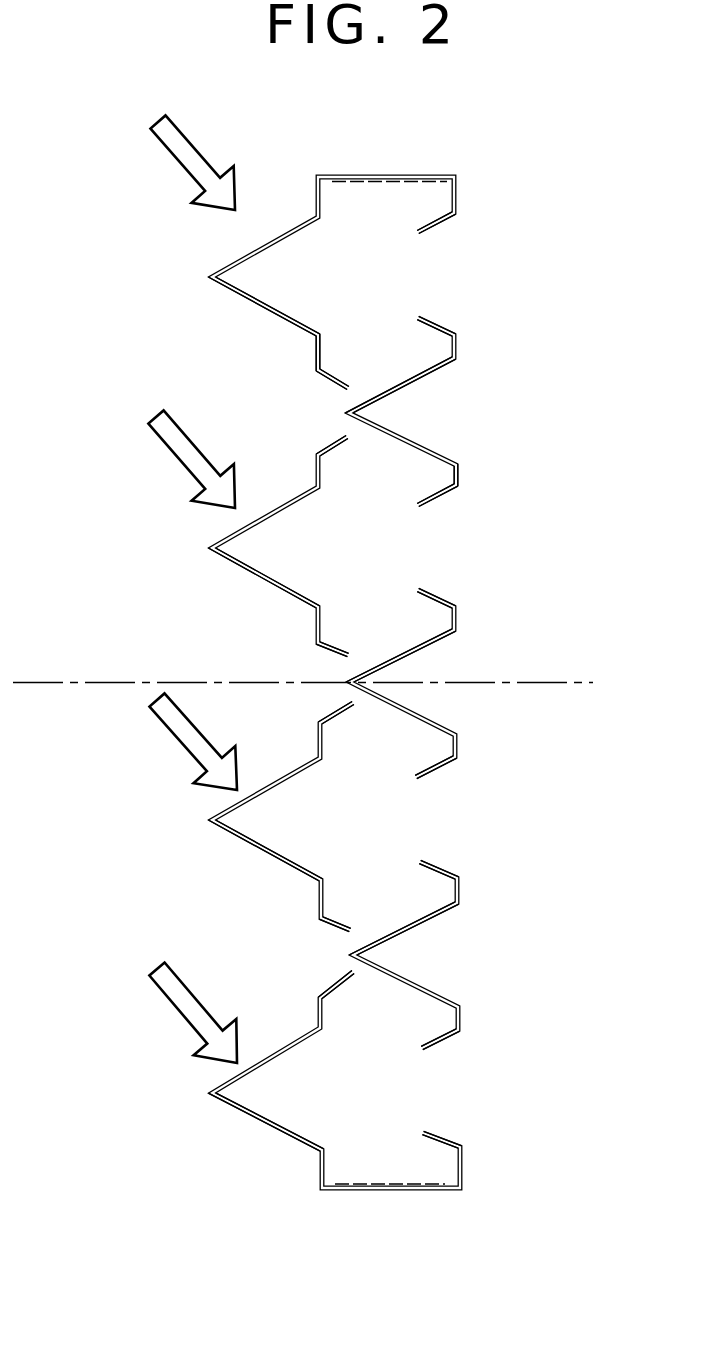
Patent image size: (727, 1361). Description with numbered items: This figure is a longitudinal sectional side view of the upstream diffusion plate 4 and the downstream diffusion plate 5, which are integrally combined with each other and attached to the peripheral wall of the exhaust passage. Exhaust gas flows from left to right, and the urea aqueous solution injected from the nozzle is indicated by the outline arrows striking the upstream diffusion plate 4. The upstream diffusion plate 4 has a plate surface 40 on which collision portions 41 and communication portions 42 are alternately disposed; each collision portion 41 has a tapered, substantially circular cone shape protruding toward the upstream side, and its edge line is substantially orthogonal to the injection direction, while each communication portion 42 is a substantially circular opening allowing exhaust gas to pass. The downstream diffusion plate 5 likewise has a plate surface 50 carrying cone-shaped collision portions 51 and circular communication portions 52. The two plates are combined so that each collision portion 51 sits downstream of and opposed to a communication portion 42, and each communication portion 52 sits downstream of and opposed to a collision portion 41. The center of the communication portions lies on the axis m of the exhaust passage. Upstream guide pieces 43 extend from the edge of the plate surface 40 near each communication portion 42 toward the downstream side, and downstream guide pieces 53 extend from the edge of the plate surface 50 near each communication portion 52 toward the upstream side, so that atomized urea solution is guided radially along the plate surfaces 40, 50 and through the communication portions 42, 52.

The upstream diffusion plate 4 is at (312, 201).
The downstream diffusion plate 5 is at (460, 197).
The plate surface 40 is at (315, 360).
The collision portion 41 is at (240, 296).
The communication portion 42 is at (352, 387).
The upstream guide piece 43 is at (337, 442).
The plate surface 50 is at (452, 470).
The collision portion 51 is at (401, 383).
The communication portion 52 is at (417, 230).
The downstream guide piece 53 is at (428, 320).
The axis of the exhaust passage m is at (556, 682).